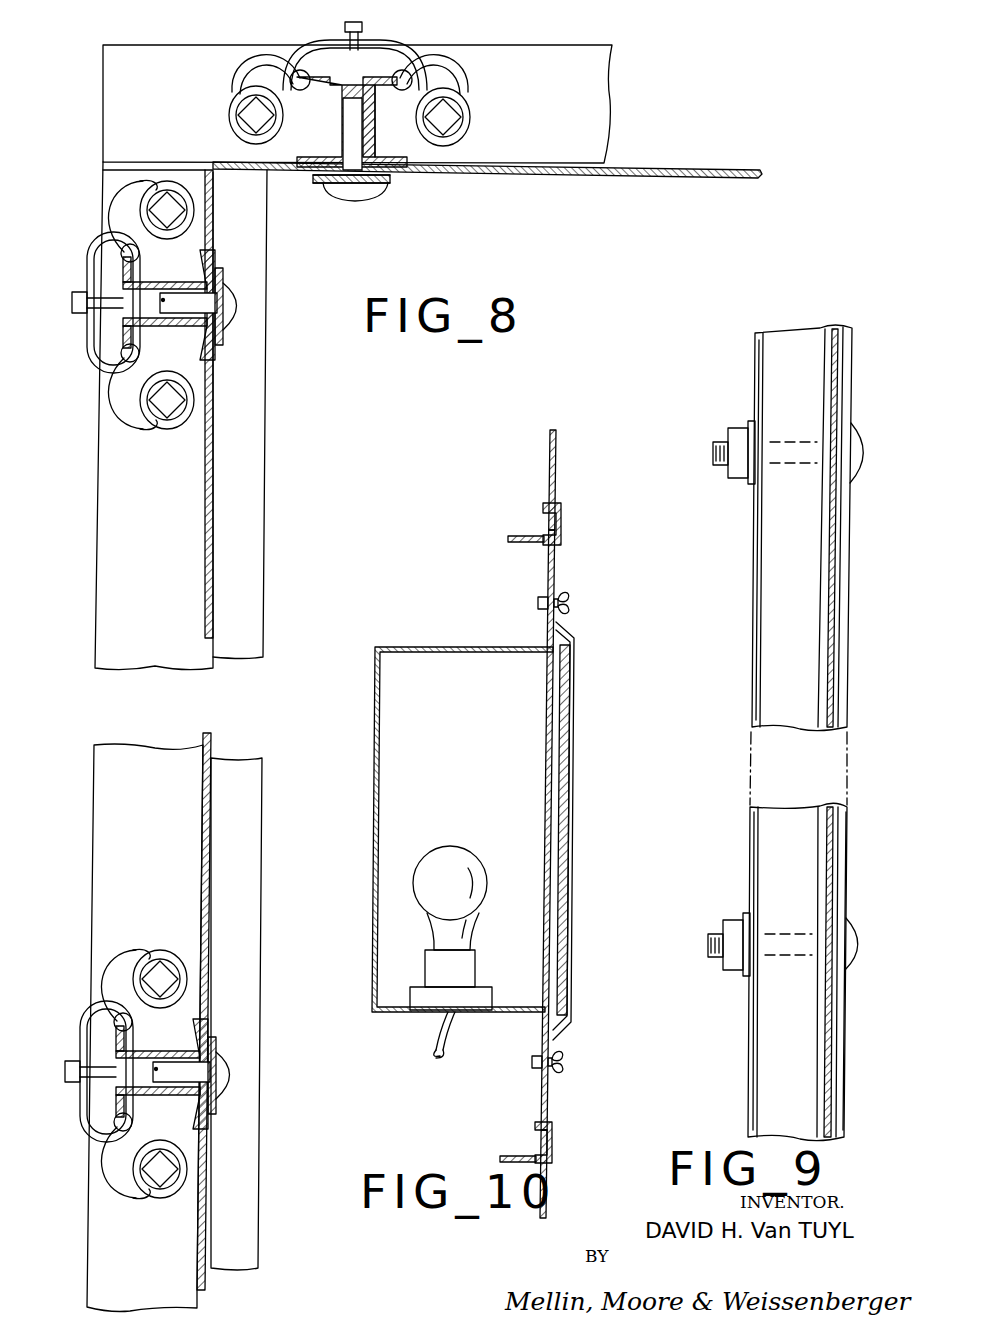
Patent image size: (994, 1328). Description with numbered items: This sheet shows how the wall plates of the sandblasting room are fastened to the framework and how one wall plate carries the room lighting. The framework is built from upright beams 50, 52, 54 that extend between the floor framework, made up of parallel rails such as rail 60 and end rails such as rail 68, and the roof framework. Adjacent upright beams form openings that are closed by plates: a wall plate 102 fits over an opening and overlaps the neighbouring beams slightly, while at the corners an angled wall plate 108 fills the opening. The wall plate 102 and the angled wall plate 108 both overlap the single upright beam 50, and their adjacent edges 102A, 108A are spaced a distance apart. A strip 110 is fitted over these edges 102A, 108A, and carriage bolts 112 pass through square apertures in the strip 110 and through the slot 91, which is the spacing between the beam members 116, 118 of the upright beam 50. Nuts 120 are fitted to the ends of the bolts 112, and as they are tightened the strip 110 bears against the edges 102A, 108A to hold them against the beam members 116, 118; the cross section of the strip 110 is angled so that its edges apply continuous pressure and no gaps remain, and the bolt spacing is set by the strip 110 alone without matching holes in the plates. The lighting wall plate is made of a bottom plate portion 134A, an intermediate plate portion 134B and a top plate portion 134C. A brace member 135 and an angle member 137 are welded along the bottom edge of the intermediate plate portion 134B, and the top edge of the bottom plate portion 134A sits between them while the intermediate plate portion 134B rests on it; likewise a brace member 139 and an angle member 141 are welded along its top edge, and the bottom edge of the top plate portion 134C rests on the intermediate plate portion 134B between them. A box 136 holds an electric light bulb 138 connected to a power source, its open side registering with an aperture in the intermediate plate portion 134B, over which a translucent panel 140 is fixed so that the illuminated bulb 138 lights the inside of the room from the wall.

In FIG. 8, the upright beam 50 is at (402, 68).
In FIG. 9, the upright beam 50 is at (752, 636).
In FIG. 8, the upright beam 52 is at (212, 358).
In FIG. 8, the upright beam 54 is at (205, 1025).
In FIG. 8, the rail 60 is at (100, 512).
In FIG. 8, the rail 68 is at (596, 75).
In FIG. 8, the slot 91 is at (352, 90).
In FIG. 8, the wall plate 102 is at (547, 180).
In FIG. 8, the edge of wall plate 102A is at (380, 183).
In FIG. 8, the angled wall plate 108 is at (215, 235).
In FIG. 9, the angled wall plate 108 is at (836, 682).
In FIG. 8, the edge of angled wall plate 108A is at (345, 185).
In FIG. 8, the strip 110 is at (386, 180).
In FIG. 9, the strip 110 is at (843, 888).
In FIG. 8, the carriage bolt 112 is at (326, 194).
In FIG. 9, the carriage bolt 112 is at (860, 468).
In FIG. 8, the beam member 116 is at (332, 106).
In FIG. 9, the beam member 116 is at (756, 688).
In FIG. 8, the beam member 118 is at (376, 104).
In FIG. 9, the nut 120 is at (742, 470).
In FIG. 10, the bottom plate portion 134A is at (550, 1183).
In FIG. 10, the intermediate plate portion 134B is at (556, 557).
In FIG. 10, the top plate portion 134C is at (556, 455).
In FIG. 10, the brace member 135 is at (556, 1133).
In FIG. 10, the box 136 is at (428, 645).
In FIG. 10, the angle member 137 is at (536, 1136).
In FIG. 10, the electric light bulb 138 is at (438, 848).
In FIG. 10, the brace member 139 is at (562, 516).
In FIG. 10, the translucent panel 140 is at (566, 770).
In FIG. 10, the angle member 141 is at (524, 536).